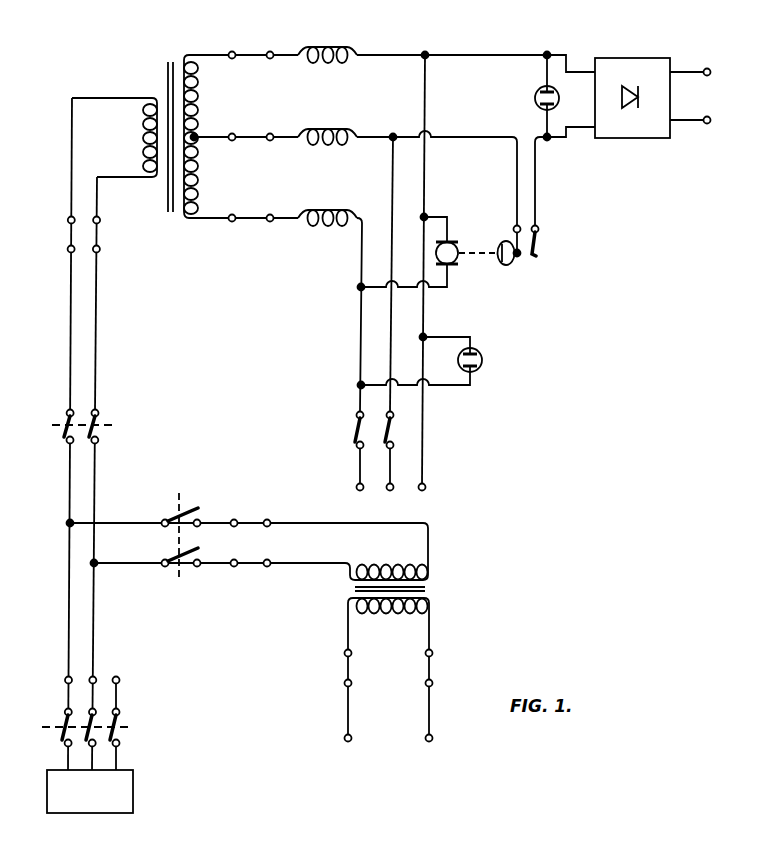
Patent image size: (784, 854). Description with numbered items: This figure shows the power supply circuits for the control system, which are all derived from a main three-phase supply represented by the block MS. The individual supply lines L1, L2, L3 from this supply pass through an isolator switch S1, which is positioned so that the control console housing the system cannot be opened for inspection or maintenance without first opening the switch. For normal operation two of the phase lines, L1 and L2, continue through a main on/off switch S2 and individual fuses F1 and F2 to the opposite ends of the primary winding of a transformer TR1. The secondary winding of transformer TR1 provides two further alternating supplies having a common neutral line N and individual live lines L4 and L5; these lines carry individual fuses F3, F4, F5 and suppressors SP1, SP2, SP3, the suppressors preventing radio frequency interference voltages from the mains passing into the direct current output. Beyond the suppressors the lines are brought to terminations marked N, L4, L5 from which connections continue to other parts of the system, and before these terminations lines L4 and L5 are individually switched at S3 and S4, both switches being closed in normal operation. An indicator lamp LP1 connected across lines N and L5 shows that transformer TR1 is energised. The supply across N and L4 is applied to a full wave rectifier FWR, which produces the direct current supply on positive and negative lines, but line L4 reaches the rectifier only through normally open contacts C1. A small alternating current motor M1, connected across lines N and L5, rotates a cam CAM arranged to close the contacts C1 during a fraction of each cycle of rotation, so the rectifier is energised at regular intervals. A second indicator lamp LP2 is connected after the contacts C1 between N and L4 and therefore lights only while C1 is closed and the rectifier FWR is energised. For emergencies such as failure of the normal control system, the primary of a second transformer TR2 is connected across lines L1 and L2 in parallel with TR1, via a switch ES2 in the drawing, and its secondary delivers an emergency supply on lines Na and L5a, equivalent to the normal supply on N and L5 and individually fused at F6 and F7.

The transformer TR1 is at (166, 73).
The fuse F1 is at (69, 239).
The fuse F2 is at (98, 238).
The fuse F3 is at (249, 51).
The fuse F4 is at (249, 133).
The fuse F5 is at (249, 214).
The fuse F6 is at (250, 520).
The fuse F7 is at (251, 566).
The suppressor SP1 is at (331, 37).
The suppressor SP2 is at (331, 121).
The suppressor SP3 is at (331, 201).
The full wave rectifier FWR is at (641, 47).
The indicator lamp LP1 is at (483, 361).
The indicator lamp LP2 is at (535, 98).
The alternating current motor M1 is at (450, 246).
The cam CAM is at (511, 265).
The normally open contacts C1 is at (537, 252).
The isolator switch S1 is at (128, 730).
The main on/off switch S2 is at (106, 425).
The switch S3 is at (395, 429).
The switch S4 is at (356, 429).
The emergency/end switch ES2 is at (175, 505).
The second transformer TR2 is at (430, 590).
The main three-phase supply MS is at (90, 791).
The supply line L1 is at (66, 676).
The supply line L2 is at (96, 676).
The supply line L3 is at (120, 680).
The live line L4 is at (388, 491).
The live line L5 is at (358, 491).
The emergency supply line L5a is at (347, 742).
The neutral line N is at (420, 491).
The emergency supply line Na is at (428, 742).